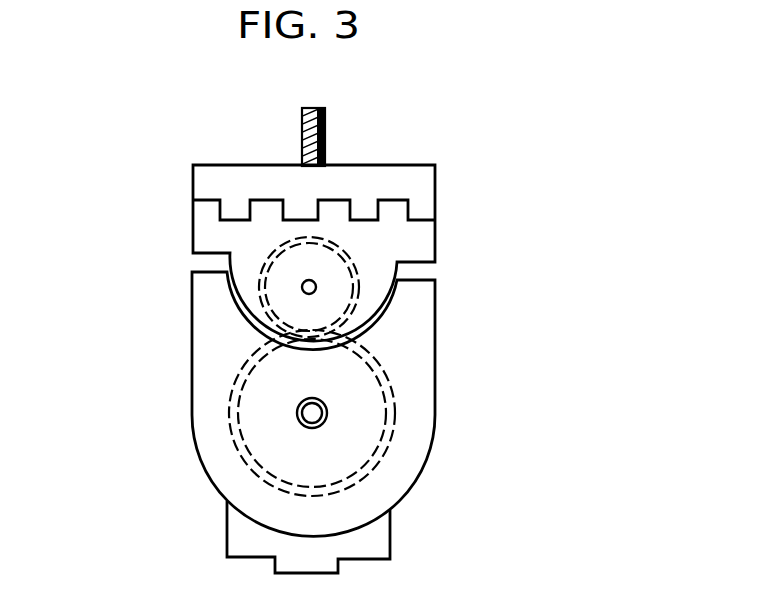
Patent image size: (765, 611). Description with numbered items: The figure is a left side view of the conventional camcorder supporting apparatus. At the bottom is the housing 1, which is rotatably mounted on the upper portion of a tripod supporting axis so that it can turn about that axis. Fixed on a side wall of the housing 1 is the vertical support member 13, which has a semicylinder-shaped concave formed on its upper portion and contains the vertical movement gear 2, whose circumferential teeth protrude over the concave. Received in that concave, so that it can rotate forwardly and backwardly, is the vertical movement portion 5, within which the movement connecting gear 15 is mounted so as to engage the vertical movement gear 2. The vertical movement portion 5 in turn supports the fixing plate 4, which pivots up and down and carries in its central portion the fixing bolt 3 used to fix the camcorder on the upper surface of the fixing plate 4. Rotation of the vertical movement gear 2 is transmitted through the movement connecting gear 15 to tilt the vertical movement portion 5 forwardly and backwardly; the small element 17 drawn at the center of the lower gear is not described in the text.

The housing 1 is at (237, 527).
The vertical movement gear 2 is at (390, 403).
The fixing bolt 3 is at (325, 119).
The fixing plate 4 is at (237, 178).
The vertical movement portion 5 is at (197, 242).
The vertical support member 13 is at (198, 367).
The movement connecting gear 15 is at (347, 298).
The shaft 17 is at (305, 413).